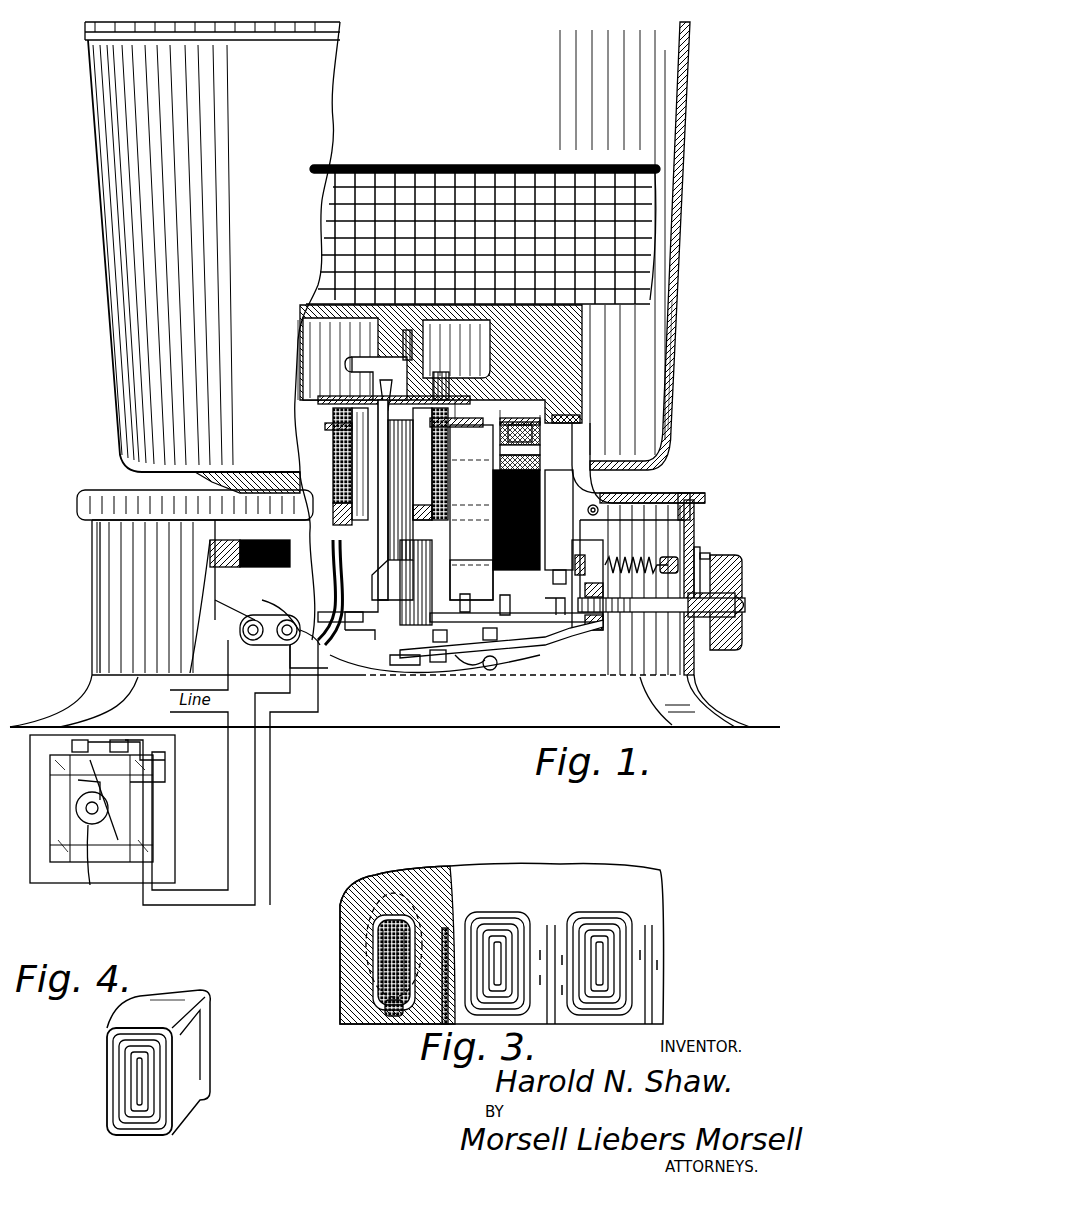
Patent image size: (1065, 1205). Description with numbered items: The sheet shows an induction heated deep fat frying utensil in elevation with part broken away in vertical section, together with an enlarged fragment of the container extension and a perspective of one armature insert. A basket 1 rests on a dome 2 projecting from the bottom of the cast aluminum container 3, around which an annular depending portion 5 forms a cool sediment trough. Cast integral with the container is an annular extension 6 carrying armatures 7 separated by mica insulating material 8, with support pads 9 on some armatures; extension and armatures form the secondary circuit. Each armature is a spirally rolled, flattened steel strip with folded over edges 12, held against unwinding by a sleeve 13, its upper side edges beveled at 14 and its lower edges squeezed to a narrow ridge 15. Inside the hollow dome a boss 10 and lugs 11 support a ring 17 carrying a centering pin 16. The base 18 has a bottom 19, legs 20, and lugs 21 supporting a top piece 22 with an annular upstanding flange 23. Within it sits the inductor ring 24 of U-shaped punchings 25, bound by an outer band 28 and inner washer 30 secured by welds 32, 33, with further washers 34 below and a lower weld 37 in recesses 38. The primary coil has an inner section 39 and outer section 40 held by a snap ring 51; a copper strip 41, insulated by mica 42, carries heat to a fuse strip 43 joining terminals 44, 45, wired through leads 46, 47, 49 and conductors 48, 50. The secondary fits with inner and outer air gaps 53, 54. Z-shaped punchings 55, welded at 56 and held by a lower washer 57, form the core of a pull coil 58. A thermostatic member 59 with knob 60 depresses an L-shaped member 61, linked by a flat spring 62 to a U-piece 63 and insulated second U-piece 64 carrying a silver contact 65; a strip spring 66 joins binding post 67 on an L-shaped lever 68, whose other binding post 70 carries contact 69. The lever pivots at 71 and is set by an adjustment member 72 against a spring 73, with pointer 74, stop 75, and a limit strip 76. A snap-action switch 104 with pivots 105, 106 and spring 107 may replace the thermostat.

In FIG. 1, the basket 1 is at (448, 163).
In FIG. 1, the dome 2 is at (566, 332).
In FIG. 1, the container 3 is at (688, 125).
In FIG. 1, the annular depending portion 5 is at (668, 440).
In FIG. 3, the annular extension 6 is at (345, 979).
In FIG. 1, the armatures 7 is at (515, 418).
In FIG. 3, the armatures 7 is at (495, 912).
In FIG. 4, the armatures 7 is at (210, 1025).
In FIG. 3, the insulating material 8 is at (549, 922).
In FIG. 1, the support pads 9 is at (505, 420).
In FIG. 1, the boss 10 is at (372, 340).
In FIG. 1, the lugs 11 is at (478, 372).
In FIG. 4, the folded over edges 12 is at (180, 1078).
In FIG. 3, the sleeve 13 is at (373, 945).
In FIG. 4, the sleeve 13 is at (205, 995).
In FIG. 3, the beveled upper side edges 14 is at (385, 895).
In FIG. 3, the narrow ridge 15 is at (388, 1012).
In FIG. 1, the centering pin 16 is at (352, 410).
In FIG. 1, the ring 17 is at (336, 392).
In FIG. 1, the base 18 is at (100, 612).
In FIG. 1, the bottom 19 is at (603, 680).
In FIG. 1, the legs 20 is at (712, 703).
In FIG. 1, the lugs 21 is at (695, 505).
In FIG. 1, the top piece 22 is at (660, 493).
In FIG. 1, the annular upstanding flange 23 is at (582, 450).
In FIG. 1, the inductor ring 24 is at (592, 486).
In FIG. 1, the U-shaped punchings 25 is at (548, 590).
In FIG. 1, the outer band 28 is at (565, 420).
In FIG. 1, the inner washer 30 is at (436, 398).
In FIG. 1, the weld 32 is at (542, 422).
In FIG. 1, the weld 33 is at (468, 425).
In FIG. 1, the washers 34 is at (330, 445).
In FIG. 1, the lower weld 37 is at (560, 570).
In FIG. 1, the recesses 38 is at (545, 607).
In FIG. 1, the inner section 39 is at (493, 538).
In FIG. 1, the outer section 40 is at (285, 540).
In FIG. 1, the strip of copper 41 is at (250, 600).
In FIG. 1, the mica 42 is at (323, 658).
In FIG. 1, the fuse strip 43 is at (265, 640).
In FIG. 1, the terminal 44 is at (190, 765).
In FIG. 1, the terminal 45 is at (207, 775).
In FIG. 1, the lead 46 is at (215, 620).
In FIG. 1, the lead 47 is at (277, 604).
In FIG. 1, the conductor 48 is at (270, 735).
In FIG. 1, the lead 49 is at (323, 642).
In FIG. 1, the conductor 50 is at (318, 700).
In FIG. 1, the snap ring 51 is at (540, 460).
In FIG. 1, the air gap 53 is at (462, 445).
In FIG. 1, the outer air gap 54 is at (540, 438).
In FIG. 1, the Z-shaped punchings 55 is at (445, 580).
In FIG. 1, the weld 56 is at (420, 545).
In FIG. 1, the lower washer 57 is at (466, 612).
In FIG. 1, the coil 58 is at (448, 486).
In FIG. 1, the thermostatic member 59 is at (360, 372).
In FIG. 1, the knob 60 is at (372, 394).
In FIG. 1, the L-shaped member 61 is at (388, 450).
In FIG. 1, the flat spring 62 is at (372, 572).
In FIG. 1, the U-piece 63 is at (372, 592).
In FIG. 1, the second U-piece 64 is at (375, 675).
In FIG. 1, the silver contact 65 is at (408, 668).
In FIG. 1, the strip spring 66 is at (450, 637).
In FIG. 1, the binding post 67 is at (498, 636).
In FIG. 1, the L-shaped lever 68 is at (588, 637).
In FIG. 1, the silver contact 69 is at (438, 665).
In FIG. 1, the binding post 70 is at (465, 670).
In FIG. 1, the pivot 71 is at (600, 511).
In FIG. 1, the adjustment member 72 is at (736, 572).
In FIG. 1, the spring 73 is at (648, 555).
In FIG. 1, the pointer 74 is at (700, 555).
In FIG. 1, the stop 75 is at (712, 556).
In FIG. 1, the limit strip 76 is at (362, 635).
In FIG. 1, the switch 104 is at (38, 845).
In FIG. 1, the pivot 105 is at (118, 790).
In FIG. 1, the pivot 106 is at (92, 852).
In FIG. 1, the spring 107 is at (78, 785).